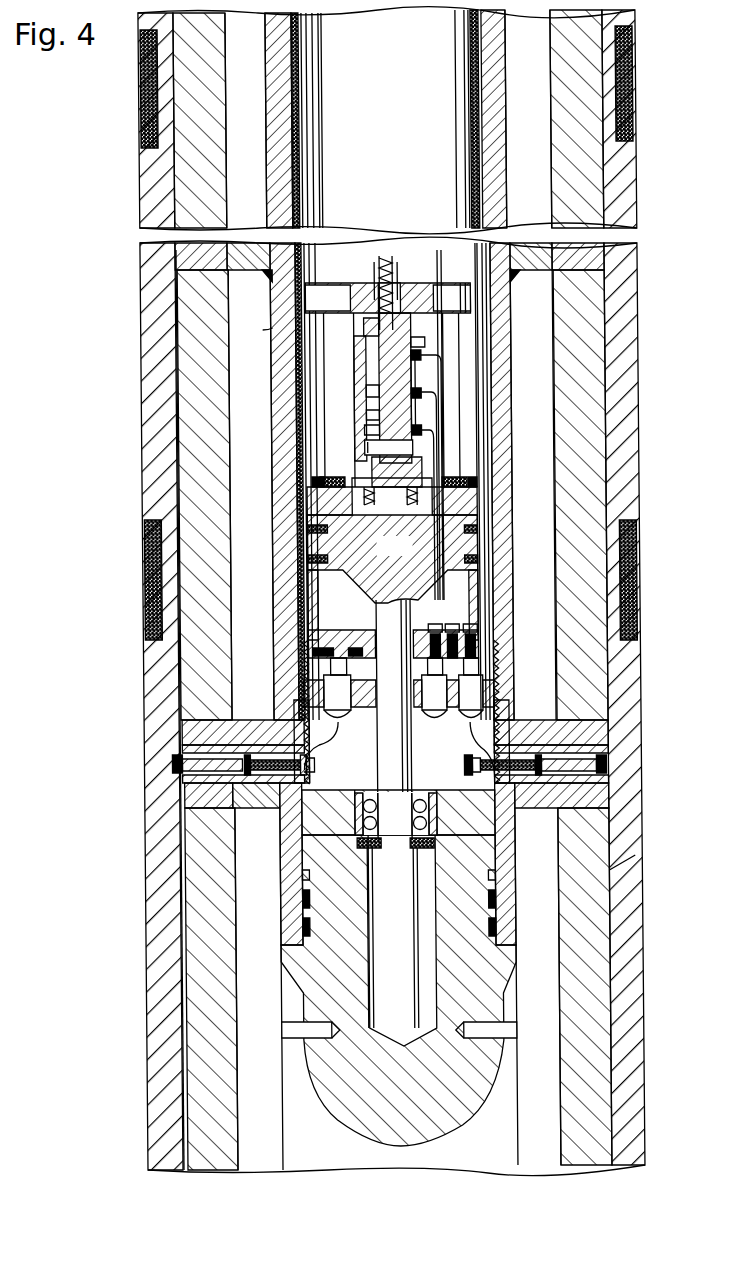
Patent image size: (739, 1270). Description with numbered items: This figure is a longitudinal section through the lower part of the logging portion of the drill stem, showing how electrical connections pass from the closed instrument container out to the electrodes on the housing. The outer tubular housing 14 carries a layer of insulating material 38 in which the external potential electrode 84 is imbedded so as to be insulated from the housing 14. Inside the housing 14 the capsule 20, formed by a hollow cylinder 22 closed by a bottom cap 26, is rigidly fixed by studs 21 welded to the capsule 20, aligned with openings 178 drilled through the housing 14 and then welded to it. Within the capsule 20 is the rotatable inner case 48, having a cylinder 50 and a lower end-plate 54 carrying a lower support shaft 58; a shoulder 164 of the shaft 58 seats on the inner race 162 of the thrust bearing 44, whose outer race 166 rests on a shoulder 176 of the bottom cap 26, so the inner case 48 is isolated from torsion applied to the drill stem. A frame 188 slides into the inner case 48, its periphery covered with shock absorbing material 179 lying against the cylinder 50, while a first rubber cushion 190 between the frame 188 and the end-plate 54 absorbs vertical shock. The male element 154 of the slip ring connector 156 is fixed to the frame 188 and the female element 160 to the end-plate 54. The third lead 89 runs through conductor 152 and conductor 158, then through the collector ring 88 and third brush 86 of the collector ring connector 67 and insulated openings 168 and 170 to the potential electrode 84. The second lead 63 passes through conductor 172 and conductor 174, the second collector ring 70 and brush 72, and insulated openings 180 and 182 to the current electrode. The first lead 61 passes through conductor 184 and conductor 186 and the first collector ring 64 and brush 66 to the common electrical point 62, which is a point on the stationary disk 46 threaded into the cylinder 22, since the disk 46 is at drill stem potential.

The tubular housing 14 is at (620, 865).
The capsule 20 is at (264, 484).
The studs 21 is at (246, 266).
The hollow cylinder 22 is at (280, 888).
The bottom cap 26 is at (455, 1110).
The insulating material 38 is at (640, 95).
The thrust bearing 44 is at (363, 800).
The stationary disk 46 is at (360, 718).
The inner case 48 is at (284, 415).
The cylinder 50 is at (492, 430).
The lower end-plate 54 is at (396, 557).
The lower support shaft 58 is at (394, 764).
The first lead 61 is at (378, 252).
The common electrical point 62 is at (418, 718).
The second lead 63 is at (372, 270).
The first collector ring 64 is at (425, 650).
The brush 66 is at (420, 668).
The collector ring connector 67 is at (480, 662).
The second collector ring 70 is at (340, 640).
The brush 72 is at (327, 664).
The external potential electrode 84 is at (634, 583).
The third brush 86 is at (477, 672).
The collector ring 88 is at (495, 648).
The third lead 89 is at (437, 252).
The conductor 152 is at (397, 400).
The male element 154 is at (363, 330).
The slip ring connector 156 is at (430, 341).
The conductor 158 is at (424, 345).
The female element 160 is at (358, 360).
The inner race 162 is at (420, 812).
The shoulder 164 is at (380, 810).
The outer race 166 is at (440, 835).
The insulated opening 168 is at (520, 808).
The insulated opening 170 is at (562, 808).
The conductor 172 is at (365, 389).
The conductor 174 is at (365, 414).
The shoulder 176 is at (360, 858).
The openings 178 is at (205, 262).
The shock absorbing material 179 is at (252, 331).
The insulated opening 180 is at (266, 808).
The insulated opening 182 is at (204, 808).
The conductor 184 is at (363, 430).
The conductor 186 is at (363, 448).
The frame 188 is at (447, 295).
The first rubber cushion 190 is at (495, 480).